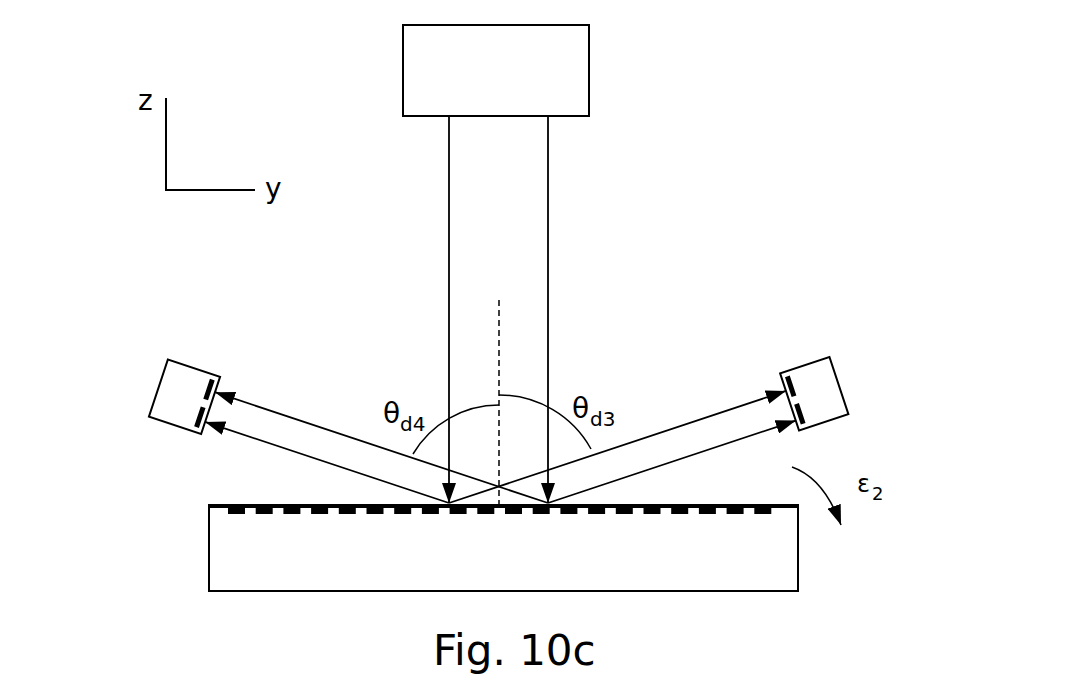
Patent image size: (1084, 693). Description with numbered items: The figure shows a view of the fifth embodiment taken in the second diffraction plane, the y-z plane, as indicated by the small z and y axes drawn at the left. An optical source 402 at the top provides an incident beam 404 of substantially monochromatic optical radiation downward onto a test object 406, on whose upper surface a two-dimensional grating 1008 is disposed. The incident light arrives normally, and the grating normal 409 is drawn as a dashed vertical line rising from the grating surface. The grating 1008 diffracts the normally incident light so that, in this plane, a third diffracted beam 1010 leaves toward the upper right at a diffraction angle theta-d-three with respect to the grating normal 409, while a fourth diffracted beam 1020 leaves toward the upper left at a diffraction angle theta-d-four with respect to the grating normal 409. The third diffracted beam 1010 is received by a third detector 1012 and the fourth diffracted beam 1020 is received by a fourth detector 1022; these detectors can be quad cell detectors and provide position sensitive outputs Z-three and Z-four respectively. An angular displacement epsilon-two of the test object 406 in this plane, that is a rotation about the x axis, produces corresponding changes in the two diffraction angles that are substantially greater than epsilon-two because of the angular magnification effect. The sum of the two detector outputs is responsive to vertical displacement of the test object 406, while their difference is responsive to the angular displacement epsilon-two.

The optical source 402 is at (589, 68).
The incident beam 404 is at (547, 202).
The grating normal 409 is at (498, 332).
The fourth diffracted beam 1020 is at (345, 433).
The third diffracted beam 1010 is at (695, 417).
The fourth detector 1022 is at (167, 370).
The third detector 1012 is at (812, 358).
The test object 406 is at (209, 578).
The 2-D grating 1008 is at (735, 535).